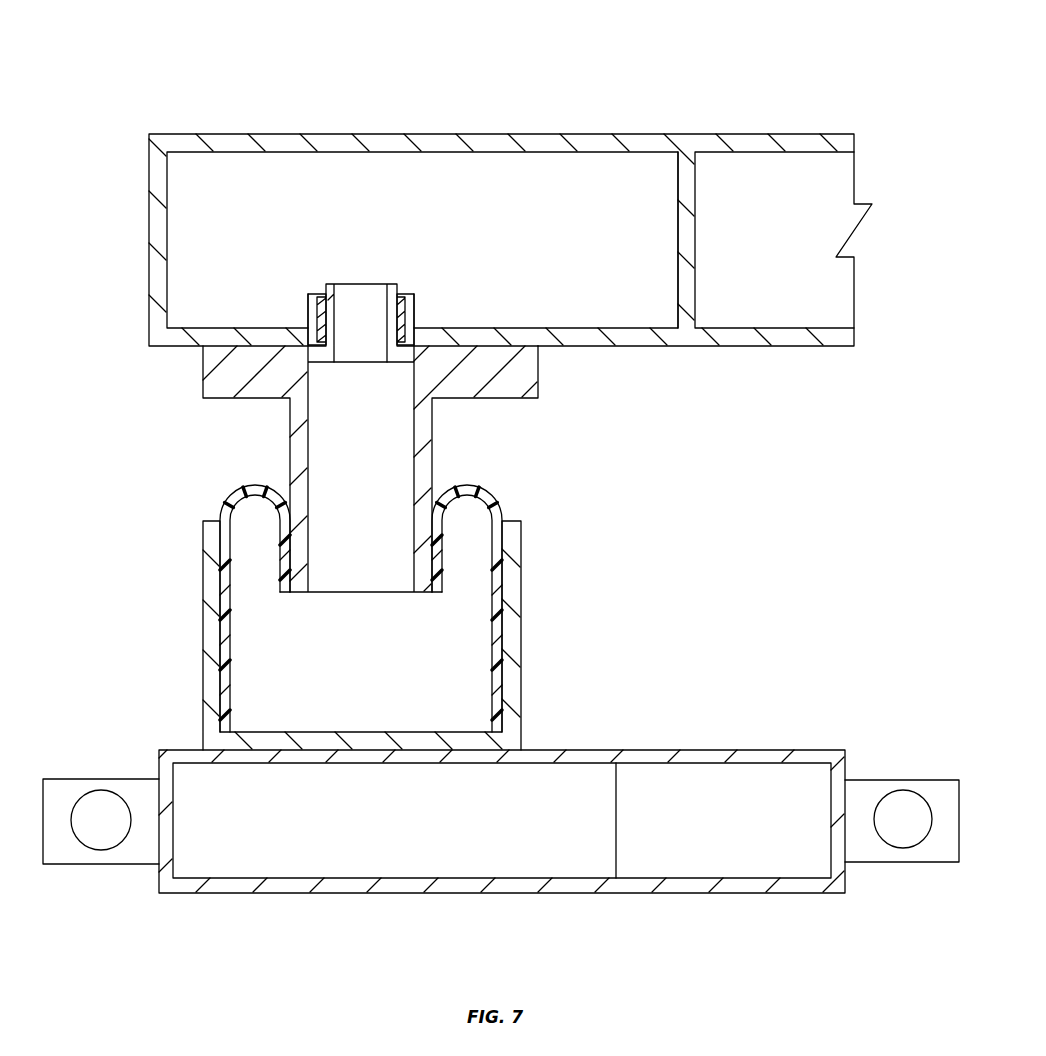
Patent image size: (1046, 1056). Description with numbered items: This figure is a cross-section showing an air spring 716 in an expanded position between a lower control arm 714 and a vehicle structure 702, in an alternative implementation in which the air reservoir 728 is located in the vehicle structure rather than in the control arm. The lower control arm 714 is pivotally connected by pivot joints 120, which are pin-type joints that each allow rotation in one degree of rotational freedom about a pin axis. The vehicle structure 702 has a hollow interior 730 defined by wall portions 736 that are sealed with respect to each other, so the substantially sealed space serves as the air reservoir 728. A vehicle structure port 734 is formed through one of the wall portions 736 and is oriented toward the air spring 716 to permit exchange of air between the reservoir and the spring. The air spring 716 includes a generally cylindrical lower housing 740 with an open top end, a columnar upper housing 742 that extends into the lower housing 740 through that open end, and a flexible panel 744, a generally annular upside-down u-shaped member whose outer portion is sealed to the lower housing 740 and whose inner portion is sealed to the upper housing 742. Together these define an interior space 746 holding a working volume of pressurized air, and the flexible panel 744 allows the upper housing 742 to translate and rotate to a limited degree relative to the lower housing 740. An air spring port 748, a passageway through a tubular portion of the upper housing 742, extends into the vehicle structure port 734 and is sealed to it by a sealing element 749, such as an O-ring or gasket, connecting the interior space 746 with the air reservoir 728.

The vehicle structure 702 is at (148, 117).
The air reservoir 728 is at (300, 117).
The hollow interior 730 is at (528, 170).
The wall portions 736 is at (622, 148).
The air spring port 748 is at (363, 293).
The vehicle structure port 734 is at (403, 293).
The sealing element 749 is at (318, 312).
The air spring 716 is at (203, 468).
The upper housing 742 is at (432, 418).
The flexible panel 744 is at (498, 502).
The lower housing 740 is at (521, 601).
The interior space 746 is at (360, 662).
The lower control arm 714 is at (146, 755).
The pivot joints 120 is at (101, 850).